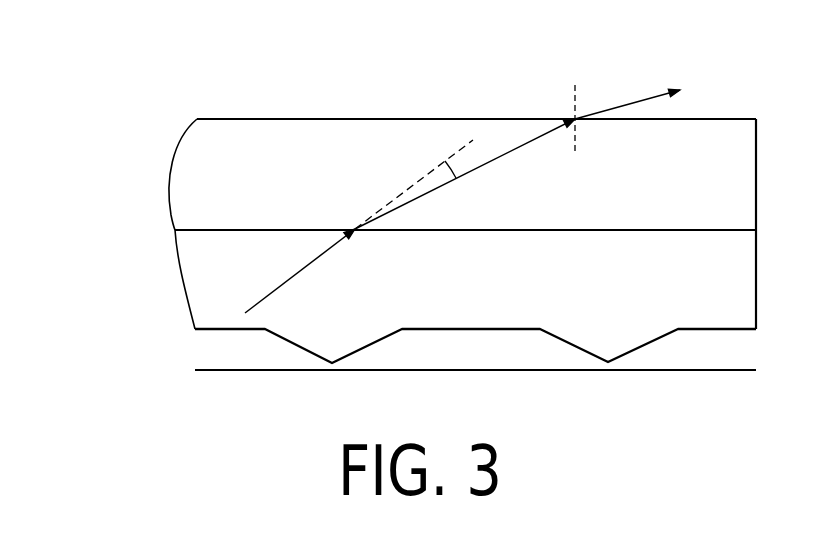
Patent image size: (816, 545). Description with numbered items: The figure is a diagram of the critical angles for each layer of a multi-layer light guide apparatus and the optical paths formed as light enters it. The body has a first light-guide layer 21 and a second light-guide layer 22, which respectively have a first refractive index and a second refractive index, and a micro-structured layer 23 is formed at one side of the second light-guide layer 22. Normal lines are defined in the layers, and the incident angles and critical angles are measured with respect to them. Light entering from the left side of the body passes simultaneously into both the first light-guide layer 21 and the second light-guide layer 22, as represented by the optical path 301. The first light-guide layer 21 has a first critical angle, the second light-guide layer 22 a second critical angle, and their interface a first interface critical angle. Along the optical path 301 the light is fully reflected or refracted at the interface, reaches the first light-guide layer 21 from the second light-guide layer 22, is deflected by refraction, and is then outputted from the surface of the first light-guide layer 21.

The first light-guide layer 21 is at (262, 147).
The second light-guide layer 22 is at (202, 265).
The micro-structured layer 23 is at (325, 343).
The optical path 301 is at (287, 277).